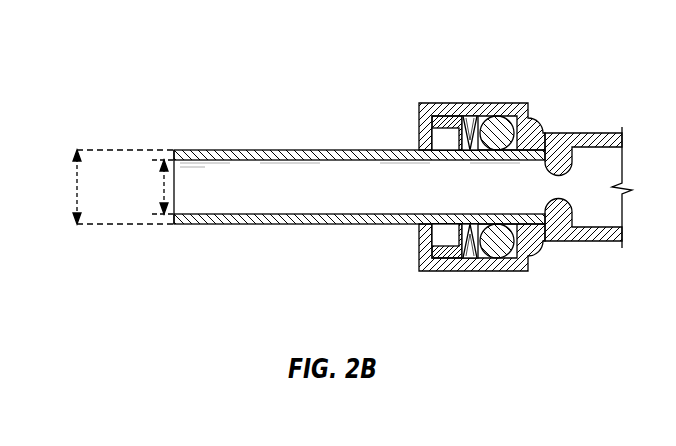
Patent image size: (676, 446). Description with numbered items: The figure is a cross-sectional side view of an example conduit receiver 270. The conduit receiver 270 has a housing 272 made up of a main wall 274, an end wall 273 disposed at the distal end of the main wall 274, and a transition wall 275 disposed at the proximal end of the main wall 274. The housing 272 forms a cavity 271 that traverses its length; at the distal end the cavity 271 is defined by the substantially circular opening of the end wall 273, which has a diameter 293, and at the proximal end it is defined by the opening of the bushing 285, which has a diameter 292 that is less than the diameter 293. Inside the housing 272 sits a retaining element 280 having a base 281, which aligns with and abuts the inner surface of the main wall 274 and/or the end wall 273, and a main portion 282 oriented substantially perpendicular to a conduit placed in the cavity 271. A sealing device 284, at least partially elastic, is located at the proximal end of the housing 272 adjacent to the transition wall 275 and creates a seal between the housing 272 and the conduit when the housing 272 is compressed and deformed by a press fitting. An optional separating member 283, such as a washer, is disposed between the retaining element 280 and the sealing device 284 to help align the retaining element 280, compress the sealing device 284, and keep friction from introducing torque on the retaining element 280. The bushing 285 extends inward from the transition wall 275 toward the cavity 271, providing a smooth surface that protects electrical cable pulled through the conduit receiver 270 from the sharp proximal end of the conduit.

The conduit receiver 270 is at (394, 60).
The cavity 271 is at (456, 180).
The housing 272 is at (443, 278).
The end wall 273 is at (426, 246).
The main wall 274 is at (495, 273).
The transition wall 275 is at (583, 242).
The retaining element 280 is at (447, 106).
The base 281 is at (443, 116).
The main portion 282 is at (434, 134).
The separating member 283 is at (472, 116).
The sealing device 284 is at (506, 119).
The bushing 285 is at (577, 158).
The diameter 292 is at (160, 183).
The diameter 293 is at (75, 187).